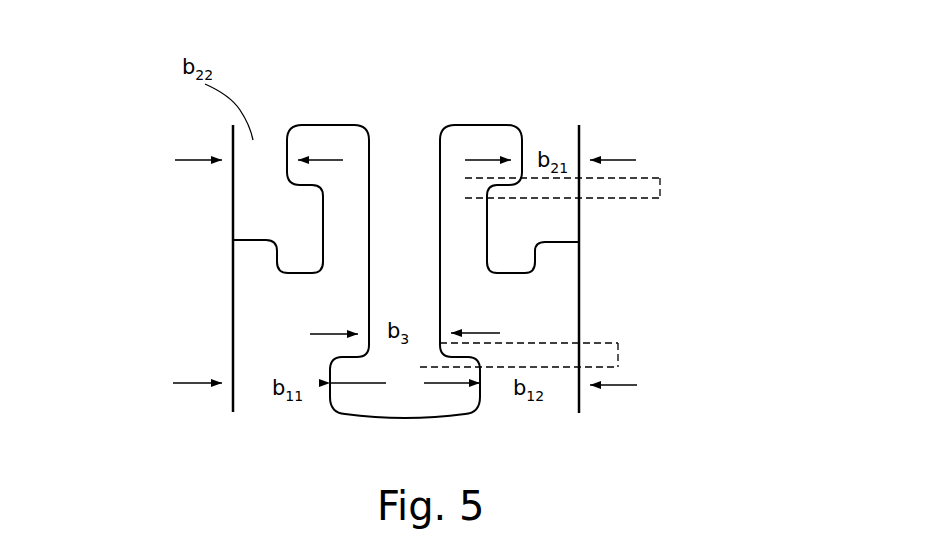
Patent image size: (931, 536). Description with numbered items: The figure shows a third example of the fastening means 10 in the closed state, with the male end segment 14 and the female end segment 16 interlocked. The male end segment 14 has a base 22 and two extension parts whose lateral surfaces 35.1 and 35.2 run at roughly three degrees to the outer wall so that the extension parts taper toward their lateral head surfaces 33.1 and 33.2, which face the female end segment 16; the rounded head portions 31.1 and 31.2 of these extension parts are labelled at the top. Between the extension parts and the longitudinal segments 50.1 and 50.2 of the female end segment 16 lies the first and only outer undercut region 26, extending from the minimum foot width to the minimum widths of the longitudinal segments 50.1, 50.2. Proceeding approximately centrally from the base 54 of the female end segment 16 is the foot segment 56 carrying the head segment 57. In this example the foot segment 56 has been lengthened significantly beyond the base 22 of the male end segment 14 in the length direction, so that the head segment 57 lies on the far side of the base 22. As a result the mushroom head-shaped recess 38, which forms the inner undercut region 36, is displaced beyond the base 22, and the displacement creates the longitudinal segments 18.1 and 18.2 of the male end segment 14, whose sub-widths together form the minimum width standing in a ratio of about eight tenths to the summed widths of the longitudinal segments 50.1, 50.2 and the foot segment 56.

The fastening means 10 is at (695, 74).
The male end segment 14 is at (137, 76).
The female end segment 16 is at (171, 405).
The longitudinal segment 18.1 is at (238, 362).
The longitudinal segment 18.2 is at (560, 357).
The base 22 is at (289, 265).
The outer undercut region 26 is at (660, 188).
The first head portion 31.1 is at (296, 116).
The second head portion 31.2 is at (543, 93).
The lateral head surface 33.1 is at (348, 114).
The lateral head surface 33.2 is at (460, 114).
The lateral surface 35.1 is at (276, 154).
The lateral surface 35.2 is at (537, 142).
The inner undercut region 36 is at (618, 355).
The recess 38 is at (415, 407).
The longitudinal segment 50.1 is at (563, 190).
The longitudinal segment 50.2 is at (240, 179).
The base 54 is at (492, 128).
The foot segment 56 is at (383, 323).
The head segment 57 is at (420, 394).